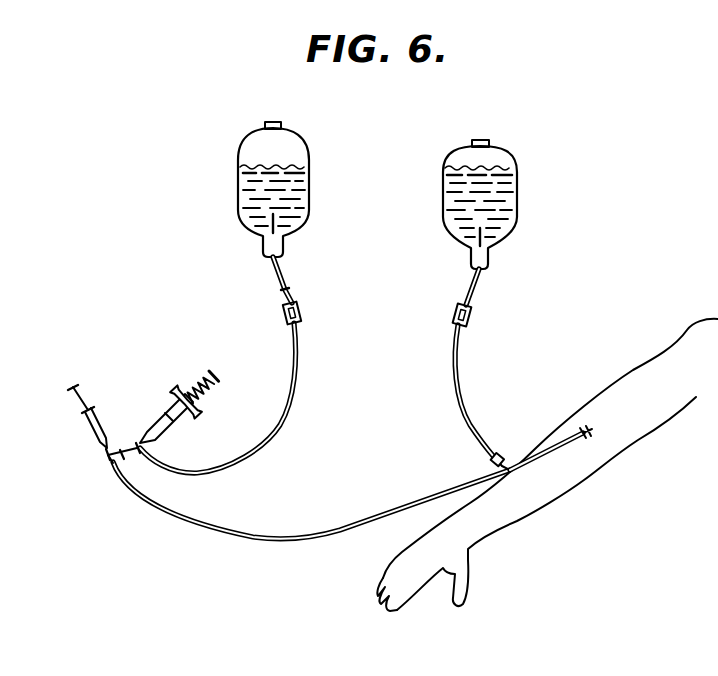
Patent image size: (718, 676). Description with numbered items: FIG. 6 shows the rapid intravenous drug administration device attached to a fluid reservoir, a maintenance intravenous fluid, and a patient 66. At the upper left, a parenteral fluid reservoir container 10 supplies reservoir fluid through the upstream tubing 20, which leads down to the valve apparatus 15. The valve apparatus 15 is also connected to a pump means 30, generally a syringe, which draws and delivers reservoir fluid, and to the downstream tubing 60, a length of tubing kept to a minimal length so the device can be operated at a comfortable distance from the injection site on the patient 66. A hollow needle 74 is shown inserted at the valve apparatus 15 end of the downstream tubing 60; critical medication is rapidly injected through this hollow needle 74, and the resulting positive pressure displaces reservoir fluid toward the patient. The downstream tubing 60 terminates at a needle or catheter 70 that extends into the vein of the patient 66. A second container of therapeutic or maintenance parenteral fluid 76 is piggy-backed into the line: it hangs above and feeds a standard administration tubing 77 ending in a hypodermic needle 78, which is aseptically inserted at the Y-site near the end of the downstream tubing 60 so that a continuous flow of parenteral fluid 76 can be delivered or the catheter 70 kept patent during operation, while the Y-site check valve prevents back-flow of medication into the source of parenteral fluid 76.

The parenteral fluid reservoir container 10 is at (318, 201).
The parenteral fluid 76 is at (527, 189).
The upstream tubing 20 is at (277, 435).
The administration tubing 77 is at (470, 373).
The hypodermic needle 78 is at (498, 440).
The intravenous needle or catheter 70 is at (584, 427).
The patient 66 is at (693, 312).
The downstream tubing 60 is at (370, 516).
The valve apparatus 15 is at (128, 432).
The pump means 30 is at (160, 398).
The hollow needle 74 is at (94, 446).